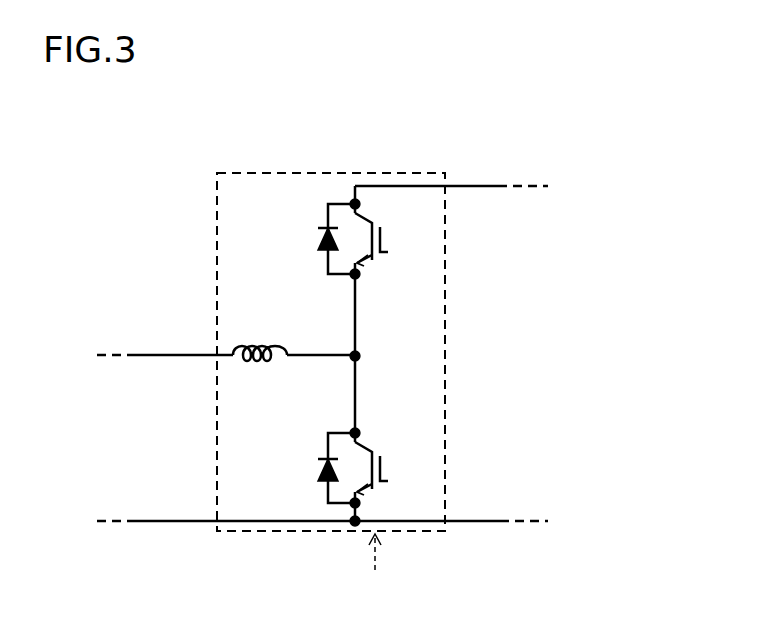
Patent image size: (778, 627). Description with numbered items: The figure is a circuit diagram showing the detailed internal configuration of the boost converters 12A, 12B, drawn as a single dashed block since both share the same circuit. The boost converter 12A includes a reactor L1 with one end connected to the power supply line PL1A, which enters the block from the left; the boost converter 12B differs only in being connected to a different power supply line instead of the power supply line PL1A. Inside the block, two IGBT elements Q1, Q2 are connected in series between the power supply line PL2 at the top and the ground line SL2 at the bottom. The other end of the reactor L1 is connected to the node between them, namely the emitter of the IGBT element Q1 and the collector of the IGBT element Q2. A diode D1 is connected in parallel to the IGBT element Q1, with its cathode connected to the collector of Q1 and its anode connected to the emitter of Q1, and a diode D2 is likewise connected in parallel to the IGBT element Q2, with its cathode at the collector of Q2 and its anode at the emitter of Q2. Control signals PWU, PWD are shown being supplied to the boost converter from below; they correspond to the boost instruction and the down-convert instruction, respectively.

The boost converter 12A is at (292, 313).
The boost converter 12B is at (221, 171).
The power supply line PL2 is at (482, 184).
The IGBT element Q1 is at (390, 237).
The diode D1 is at (316, 239).
The IGBT element Q2 is at (390, 467).
The diode D2 is at (316, 468).
The reactor L1 is at (294, 338).
The power supply line PL1A is at (165, 312).
The ground line SL2 is at (167, 520).
The control signal PWU is at (377, 565).
The control signal PWD is at (375, 552).